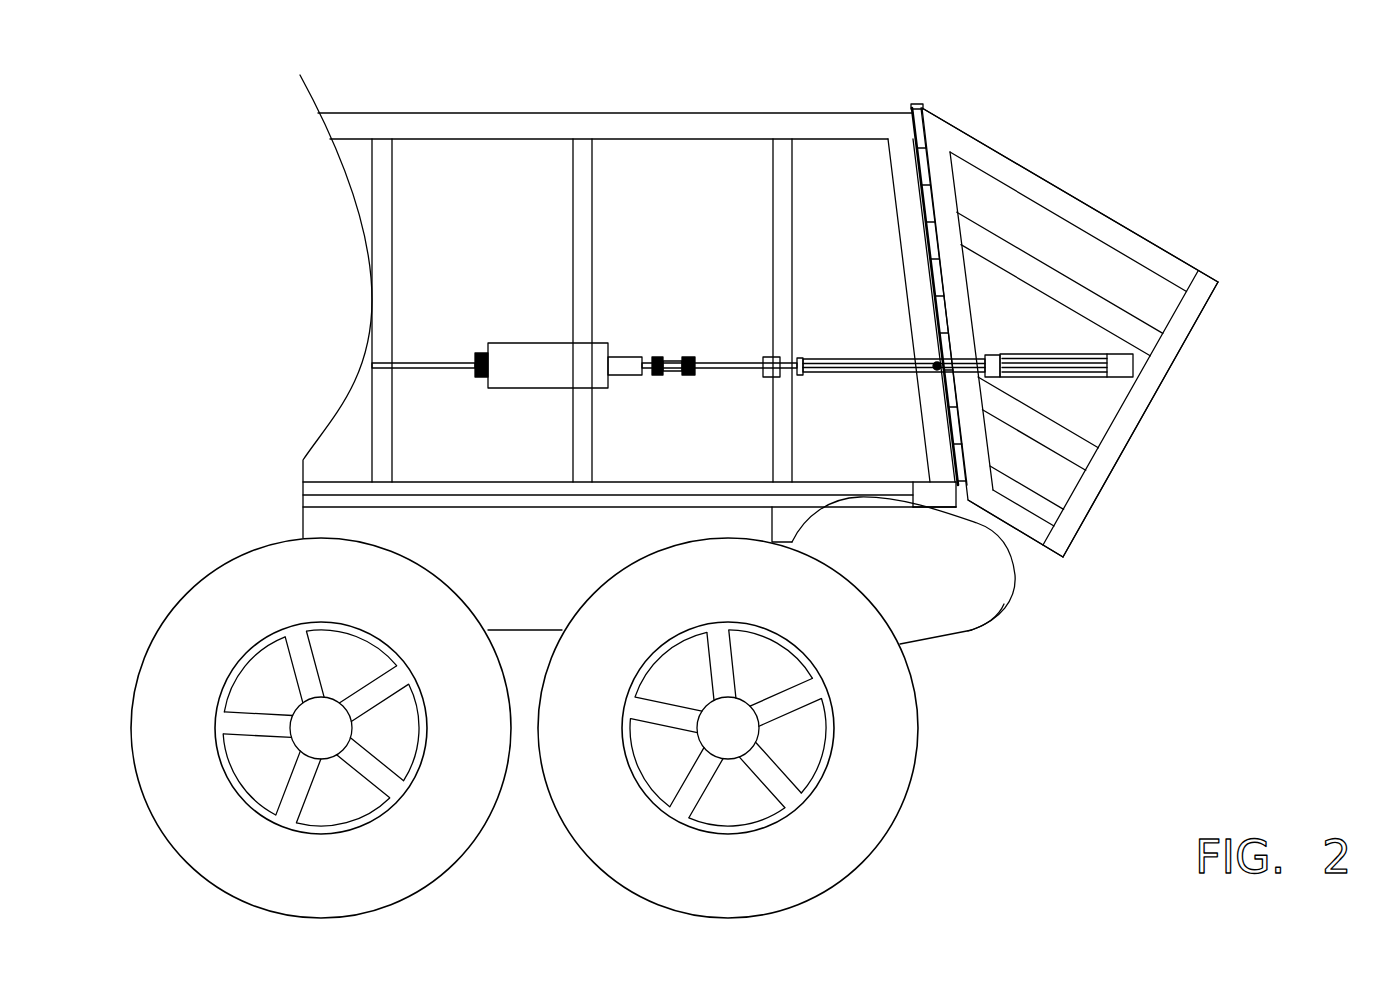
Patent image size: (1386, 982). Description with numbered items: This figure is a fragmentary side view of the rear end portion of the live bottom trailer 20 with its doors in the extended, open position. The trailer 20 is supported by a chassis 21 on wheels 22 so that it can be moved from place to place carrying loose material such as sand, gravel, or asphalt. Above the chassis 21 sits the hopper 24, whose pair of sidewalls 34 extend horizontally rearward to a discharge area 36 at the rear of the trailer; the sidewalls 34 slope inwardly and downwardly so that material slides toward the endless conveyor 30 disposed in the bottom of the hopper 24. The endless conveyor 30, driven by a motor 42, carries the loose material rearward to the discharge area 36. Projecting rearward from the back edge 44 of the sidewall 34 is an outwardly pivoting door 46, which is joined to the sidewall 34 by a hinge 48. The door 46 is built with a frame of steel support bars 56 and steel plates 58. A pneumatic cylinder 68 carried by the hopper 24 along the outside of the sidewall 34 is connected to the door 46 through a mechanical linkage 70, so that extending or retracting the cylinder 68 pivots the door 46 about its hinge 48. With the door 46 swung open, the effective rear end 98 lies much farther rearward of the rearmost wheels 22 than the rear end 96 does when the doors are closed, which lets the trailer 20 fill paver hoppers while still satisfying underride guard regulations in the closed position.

The live bottom trailer 20 is at (752, 483).
The chassis 21 is at (362, 524).
The wheels 22 is at (598, 820).
The hopper 24 is at (402, 110).
The endless conveyor 30 is at (1022, 558).
The sidewalls 34 is at (572, 130).
The discharge area 36 is at (1147, 360).
The motor 42 is at (947, 605).
The back edge 44 is at (927, 172).
The outwardly pivoting door 46 is at (1185, 317).
The hinge 48 is at (922, 104).
The steel support bars 56 is at (1050, 200).
The steel plates 58 is at (1093, 262).
The pneumatic cylinder 68 is at (500, 353).
The mechanical linkage 70 is at (682, 352).
The rear end 96 is at (1017, 597).
The effective rear end 98 is at (1082, 548).